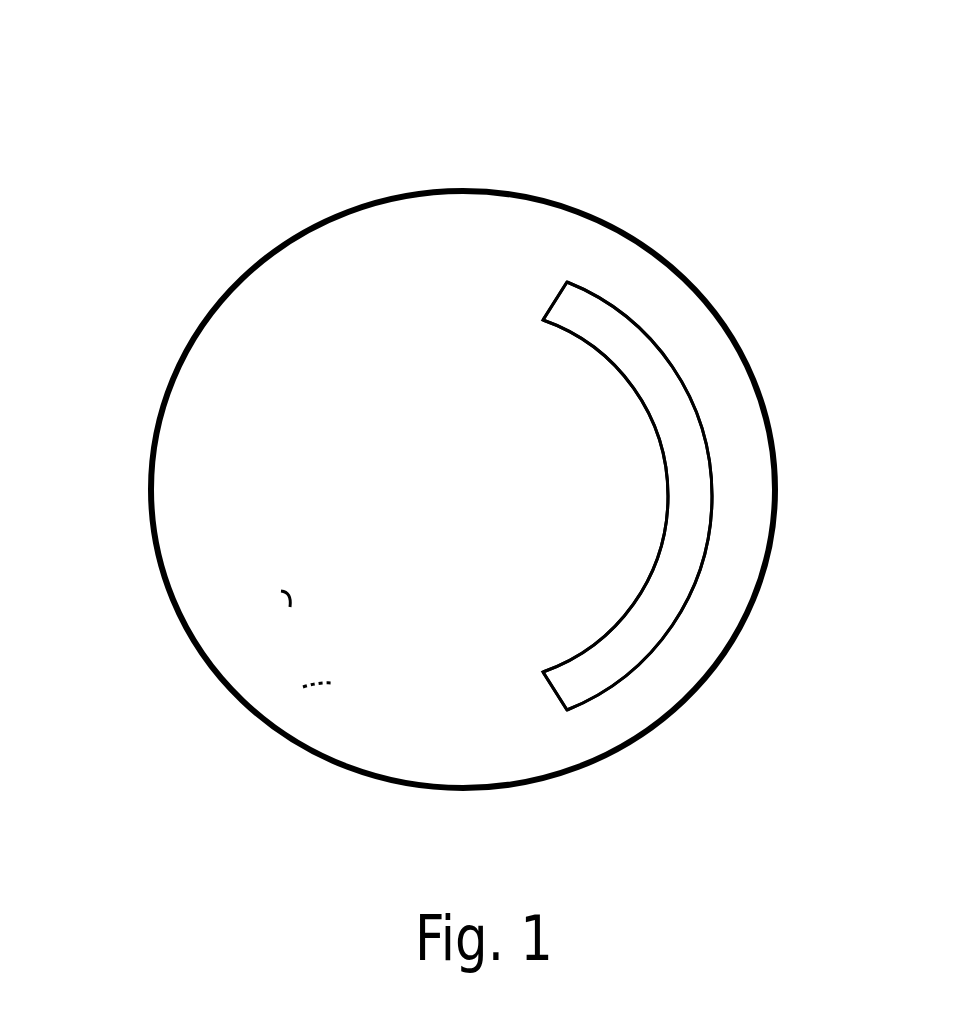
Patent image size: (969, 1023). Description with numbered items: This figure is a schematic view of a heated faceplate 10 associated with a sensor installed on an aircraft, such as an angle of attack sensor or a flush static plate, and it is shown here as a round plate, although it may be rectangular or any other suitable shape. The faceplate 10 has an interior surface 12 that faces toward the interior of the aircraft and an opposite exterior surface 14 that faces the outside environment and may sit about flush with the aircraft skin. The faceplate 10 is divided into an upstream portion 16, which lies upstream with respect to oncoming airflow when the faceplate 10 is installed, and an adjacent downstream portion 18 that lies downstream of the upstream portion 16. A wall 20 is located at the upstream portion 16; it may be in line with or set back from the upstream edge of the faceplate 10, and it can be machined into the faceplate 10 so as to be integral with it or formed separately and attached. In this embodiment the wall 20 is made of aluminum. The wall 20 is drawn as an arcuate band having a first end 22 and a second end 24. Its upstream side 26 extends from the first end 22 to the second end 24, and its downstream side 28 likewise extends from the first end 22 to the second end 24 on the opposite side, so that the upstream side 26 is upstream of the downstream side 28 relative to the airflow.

The faceplate 10 is at (156, 62).
The interior surface 12 is at (318, 687).
The exterior surface 14 is at (283, 595).
The upstream portion 16 is at (742, 413).
The downstream portion 18 is at (213, 443).
The wall 20 is at (656, 338).
The first end 22 is at (548, 302).
The second end 24 is at (553, 692).
The upstream side 26 is at (695, 487).
The downstream side 28 is at (658, 458).